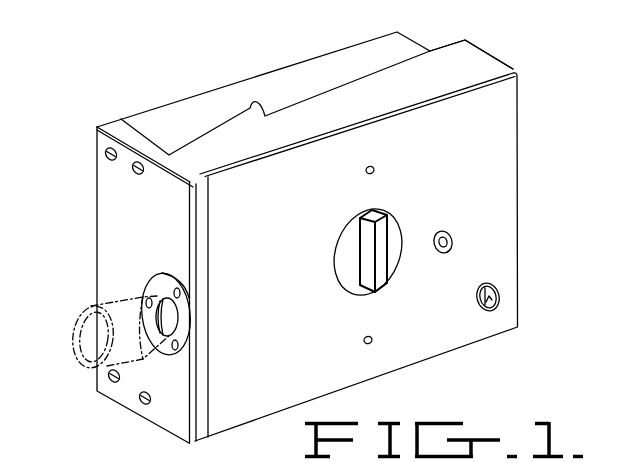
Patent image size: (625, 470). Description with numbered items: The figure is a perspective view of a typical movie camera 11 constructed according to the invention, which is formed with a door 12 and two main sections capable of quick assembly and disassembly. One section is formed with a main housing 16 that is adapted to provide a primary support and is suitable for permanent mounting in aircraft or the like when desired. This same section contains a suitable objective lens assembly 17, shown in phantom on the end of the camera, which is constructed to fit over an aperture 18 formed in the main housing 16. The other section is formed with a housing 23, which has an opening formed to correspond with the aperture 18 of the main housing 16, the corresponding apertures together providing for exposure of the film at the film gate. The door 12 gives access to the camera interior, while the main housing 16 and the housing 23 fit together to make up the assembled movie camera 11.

The lock assembly 11 is at (88, 128).
The front cover plate 12 is at (509, 176).
The cover plate 16 is at (197, 107).
The lock cylinder 17 is at (78, 308).
The cylinder opening 18 is at (176, 316).
The raised top portion 23 is at (477, 62).